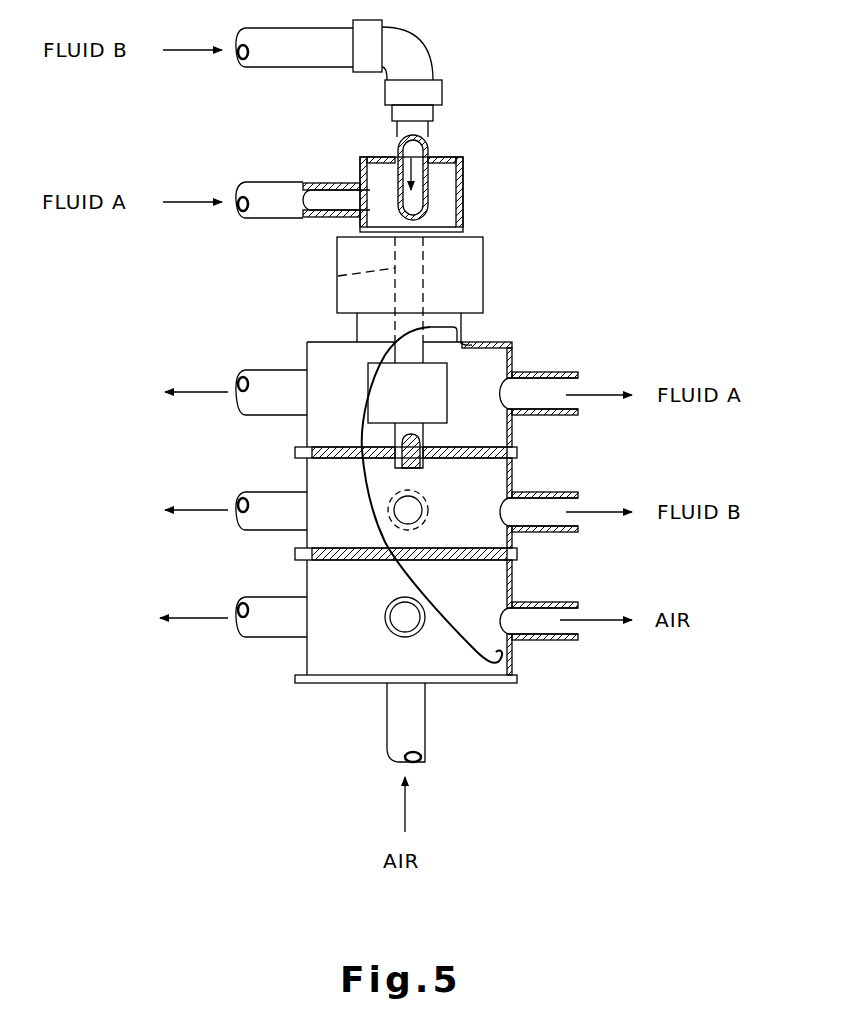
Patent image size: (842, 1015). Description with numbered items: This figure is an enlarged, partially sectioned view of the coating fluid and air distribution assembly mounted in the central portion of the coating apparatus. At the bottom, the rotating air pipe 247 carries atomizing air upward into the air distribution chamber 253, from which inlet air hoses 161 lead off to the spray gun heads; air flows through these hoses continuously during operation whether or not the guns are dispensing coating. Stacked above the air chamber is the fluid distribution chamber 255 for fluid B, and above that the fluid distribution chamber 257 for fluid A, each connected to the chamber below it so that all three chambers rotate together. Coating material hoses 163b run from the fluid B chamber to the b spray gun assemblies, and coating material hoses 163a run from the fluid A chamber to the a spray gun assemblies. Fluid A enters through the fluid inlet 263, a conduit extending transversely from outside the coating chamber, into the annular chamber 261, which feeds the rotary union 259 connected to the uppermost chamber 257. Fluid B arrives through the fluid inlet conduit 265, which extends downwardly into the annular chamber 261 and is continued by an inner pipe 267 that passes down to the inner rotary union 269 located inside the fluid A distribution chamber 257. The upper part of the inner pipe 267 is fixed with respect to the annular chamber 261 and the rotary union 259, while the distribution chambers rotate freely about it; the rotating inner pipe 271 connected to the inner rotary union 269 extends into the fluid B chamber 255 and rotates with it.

The inlet air hose 161 is at (255, 630).
The coating material hose for fluid A 163a is at (268, 412).
The coating material hose for fluid B 163b is at (394, 522).
The rotating air pipe 247 is at (425, 728).
The air distribution chamber 253 is at (512, 590).
The fluid distribution chamber for fluid B 255 is at (512, 477).
The fluid distribution chamber for fluid A 257 is at (307, 355).
The rotary union for fluid A 259 is at (483, 277).
The annular chamber 261 is at (463, 193).
The fluid inlet for fluid A 263 is at (275, 216).
The fluid inlet conduit for fluid B 265 is at (433, 48).
The inner pipe 267 is at (338, 276).
The inner rotary union for fluid B 269 is at (432, 399).
The rotating inner pipe 271 is at (432, 440).